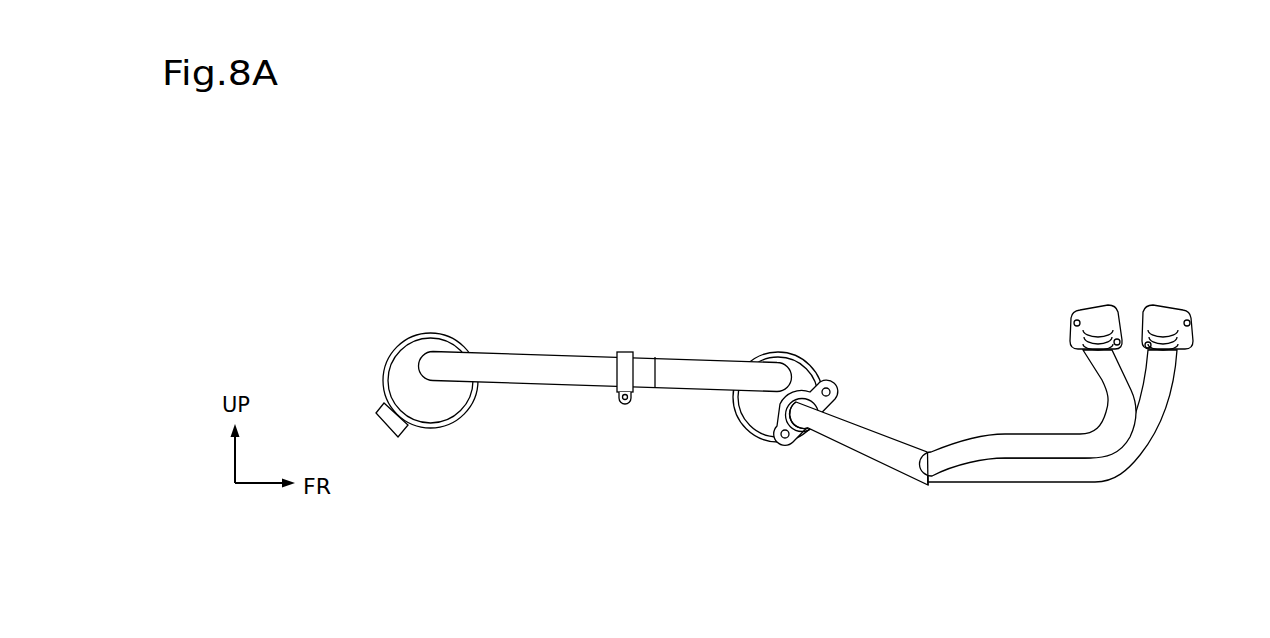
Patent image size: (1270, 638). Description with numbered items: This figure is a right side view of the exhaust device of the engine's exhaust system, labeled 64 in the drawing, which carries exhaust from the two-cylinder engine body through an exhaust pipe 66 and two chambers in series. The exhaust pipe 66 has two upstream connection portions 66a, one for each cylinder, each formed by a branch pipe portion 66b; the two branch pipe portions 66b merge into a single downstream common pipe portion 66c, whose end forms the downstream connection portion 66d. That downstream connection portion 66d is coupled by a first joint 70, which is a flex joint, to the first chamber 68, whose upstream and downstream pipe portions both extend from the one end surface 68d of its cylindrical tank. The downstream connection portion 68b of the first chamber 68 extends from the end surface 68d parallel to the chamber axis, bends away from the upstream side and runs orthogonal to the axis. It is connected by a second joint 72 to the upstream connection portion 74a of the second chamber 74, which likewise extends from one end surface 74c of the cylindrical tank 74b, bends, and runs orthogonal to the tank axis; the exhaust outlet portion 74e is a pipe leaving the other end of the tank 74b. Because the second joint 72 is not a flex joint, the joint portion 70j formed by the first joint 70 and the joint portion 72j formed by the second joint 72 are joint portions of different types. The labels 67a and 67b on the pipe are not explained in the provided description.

The exhaust device 64 is at (1042, 462).
The exhaust pipe 66 is at (1003, 416).
The upstream connection portion 66a is at (1072, 329).
The branch pipe portion 66b is at (1003, 440).
The downstream common pipe portion 66c is at (873, 450).
The downstream connection portion 66d is at (802, 418).
The joint portion 67a is at (943, 468).
The joint portion 67b is at (687, 393).
The first chamber 68 is at (761, 388).
The downstream connection portion 68b is at (704, 363).
The end surface 68d is at (753, 407).
The first joint 70 is at (823, 367).
The joint portion 70j is at (809, 379).
The second joint 72 is at (608, 400).
The joint portion 72j is at (614, 412).
The second chamber 74 is at (406, 378).
The upstream connection portion 74a is at (518, 354).
The tank 74b is at (413, 335).
The end surface 74c is at (446, 403).
The exhaust outlet portion 74e is at (383, 407).